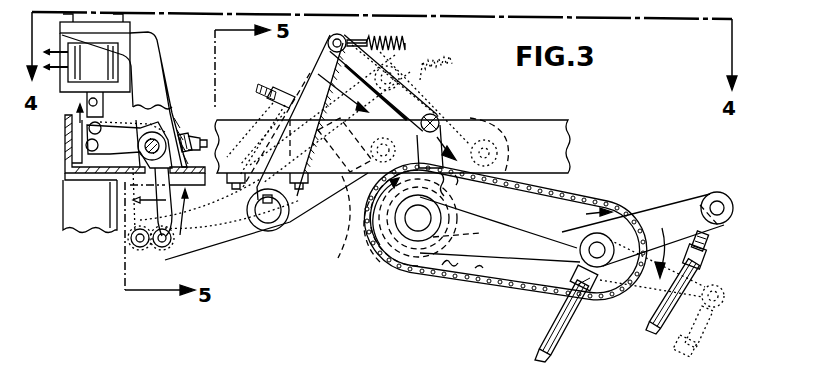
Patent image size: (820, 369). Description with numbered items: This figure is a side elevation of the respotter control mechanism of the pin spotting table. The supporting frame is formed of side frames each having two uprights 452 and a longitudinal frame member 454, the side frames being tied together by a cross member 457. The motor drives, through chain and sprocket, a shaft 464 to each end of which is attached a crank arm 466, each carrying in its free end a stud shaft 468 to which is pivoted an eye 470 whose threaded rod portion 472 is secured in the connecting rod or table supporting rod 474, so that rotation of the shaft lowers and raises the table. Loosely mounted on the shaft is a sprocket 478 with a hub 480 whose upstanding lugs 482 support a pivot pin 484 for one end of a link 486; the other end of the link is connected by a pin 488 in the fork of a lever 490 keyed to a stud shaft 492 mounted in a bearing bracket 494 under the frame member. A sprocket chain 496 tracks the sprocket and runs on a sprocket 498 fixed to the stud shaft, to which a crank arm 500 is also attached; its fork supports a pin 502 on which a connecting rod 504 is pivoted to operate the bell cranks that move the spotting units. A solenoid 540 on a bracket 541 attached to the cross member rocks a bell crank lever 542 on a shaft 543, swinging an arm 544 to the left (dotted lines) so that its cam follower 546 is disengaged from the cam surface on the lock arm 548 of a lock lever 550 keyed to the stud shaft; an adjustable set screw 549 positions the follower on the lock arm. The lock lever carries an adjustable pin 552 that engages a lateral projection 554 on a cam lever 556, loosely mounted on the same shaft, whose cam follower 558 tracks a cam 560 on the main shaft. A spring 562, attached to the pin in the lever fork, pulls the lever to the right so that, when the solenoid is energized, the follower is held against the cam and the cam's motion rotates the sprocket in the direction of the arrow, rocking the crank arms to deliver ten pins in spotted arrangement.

The upright 452 is at (67, 178).
The longitudinal frame member 454 is at (577, 180).
The cross member 457 is at (67, 148).
The shaft 464 is at (417, 219).
The crank arm 466 is at (509, 236).
The stud shaft 468 is at (597, 250).
The eye 470 is at (500, 229).
The threaded rod portion 472 is at (593, 283).
The connecting rod or table supporting rod 474 is at (553, 330).
The sprocket 478 is at (452, 278).
The hub 480 is at (465, 238).
The lug 482 is at (492, 134).
The pivot pin 484 is at (436, 122).
The link 486 is at (432, 100).
The pin 488 is at (329, 44).
The lever 490 is at (333, 68).
The stud shaft 492 is at (268, 213).
The bearing bracket 494 is at (262, 172).
The sprocket chain 496 is at (543, 292).
The sprocket 498 is at (573, 190).
The crank arm 500 is at (668, 213).
The pin 502 is at (717, 203).
The connecting rod 504 is at (658, 326).
The solenoid 540 is at (98, 63).
The bracket 541 is at (143, 62).
The bell crank lever 542 is at (107, 181).
The shaft 543 is at (153, 142).
The arm 544 is at (132, 244).
The cam follower 546 is at (153, 248).
The lock arm 548 is at (176, 250).
The adjustable set screw 549 is at (207, 135).
The lock lever 550 is at (280, 104).
The adjustable pin 552 is at (262, 92).
The lateral projection 554 is at (357, 145).
The cam lever 556 is at (324, 190).
The cam follower 558 is at (334, 252).
The cam 560 is at (488, 118).
The spring 562 is at (405, 44).